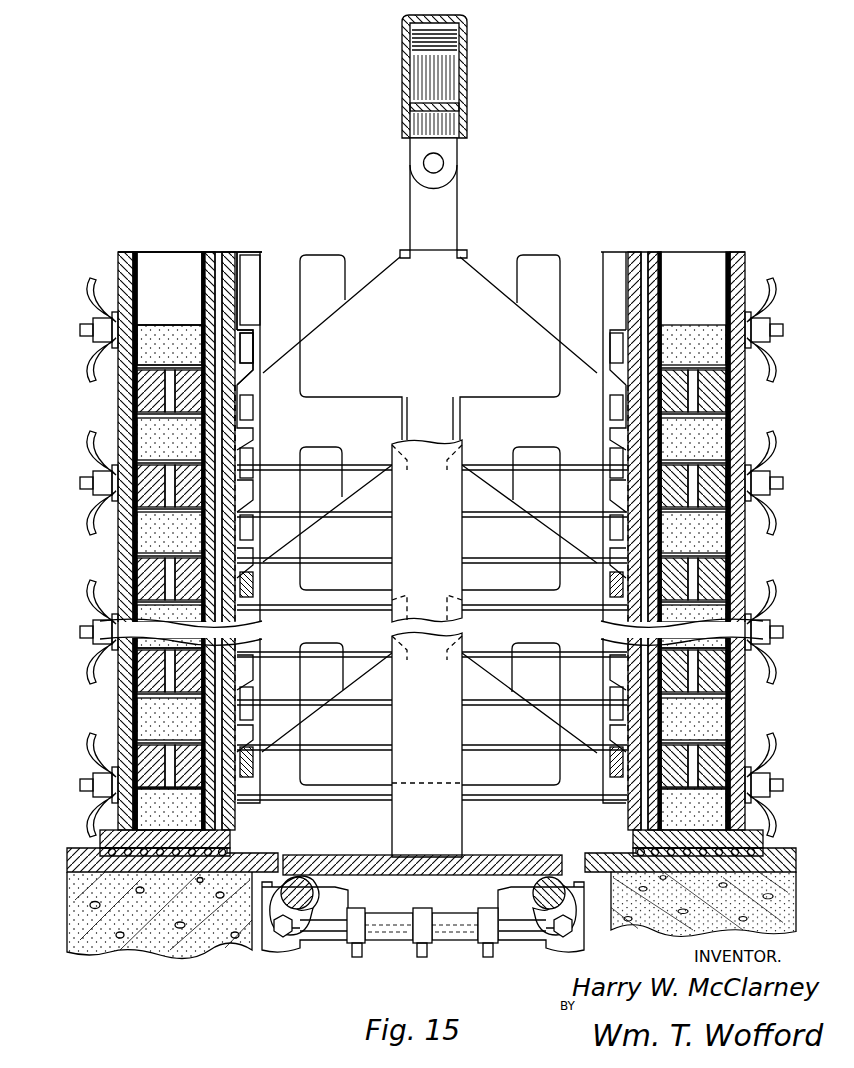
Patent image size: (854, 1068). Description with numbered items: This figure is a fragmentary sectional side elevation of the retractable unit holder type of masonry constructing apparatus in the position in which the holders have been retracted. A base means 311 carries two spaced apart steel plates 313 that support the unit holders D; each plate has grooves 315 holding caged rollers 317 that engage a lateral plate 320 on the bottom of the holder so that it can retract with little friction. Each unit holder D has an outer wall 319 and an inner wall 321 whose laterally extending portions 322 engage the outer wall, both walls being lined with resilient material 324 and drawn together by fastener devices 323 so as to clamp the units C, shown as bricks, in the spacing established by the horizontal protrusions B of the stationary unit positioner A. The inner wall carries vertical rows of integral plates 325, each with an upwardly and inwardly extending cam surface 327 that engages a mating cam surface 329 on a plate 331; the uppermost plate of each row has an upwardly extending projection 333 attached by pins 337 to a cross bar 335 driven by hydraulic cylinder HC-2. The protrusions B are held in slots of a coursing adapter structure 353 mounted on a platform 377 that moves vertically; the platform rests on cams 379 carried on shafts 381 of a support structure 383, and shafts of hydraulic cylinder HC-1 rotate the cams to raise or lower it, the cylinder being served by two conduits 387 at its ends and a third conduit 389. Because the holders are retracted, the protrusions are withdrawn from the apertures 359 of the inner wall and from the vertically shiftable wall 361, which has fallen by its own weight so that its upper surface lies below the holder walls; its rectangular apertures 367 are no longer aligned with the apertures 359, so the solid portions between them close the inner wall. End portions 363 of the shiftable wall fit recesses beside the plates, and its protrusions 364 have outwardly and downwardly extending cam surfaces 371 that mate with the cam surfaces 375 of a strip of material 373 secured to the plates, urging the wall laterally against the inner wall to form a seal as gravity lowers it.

The base means 311 is at (170, 950).
The steel plates 313 is at (75, 860).
The grooves 315 is at (95, 850).
The caged rollers 317 is at (243, 848).
The outer wall 319 is at (118, 265).
The lateral plate 320 is at (158, 840).
The inner wall 321 is at (210, 252).
The laterally extending portions 322 is at (167, 268).
The fastener devices 323 is at (100, 332).
The resilient material 324 is at (138, 252).
The plates 325 is at (325, 256).
The cam surface 327 is at (280, 362).
The mating cam surface 329 is at (377, 276).
The plate 331 is at (488, 323).
The upwardly extending projection 333 is at (428, 215).
The cross bar 335 is at (410, 62).
The pins 337 is at (444, 163).
The coursing adapter structure 353 is at (448, 817).
The apertures 359 is at (212, 282).
The vertically shiftable wall 361 is at (260, 254).
The end portions 363 is at (243, 256).
The protrusions 364 is at (250, 275).
The rectangular apertures 367 is at (240, 388).
The cam surfaces 371 is at (243, 320).
The strip of material 373 is at (255, 278).
The cam surfaces 375 is at (247, 303).
The platform 377 is at (478, 870).
The cams 379 is at (335, 896).
The shafts 381 is at (305, 892).
The support structure 383 is at (290, 948).
The conduits 387 is at (357, 957).
The third conduit 389 is at (422, 957).
The unit positioner A is at (424, 432).
The protrusions B is at (290, 455).
The units C is at (155, 325).
The unit holders D is at (108, 405).
The hydraulic cylinder HC-1 is at (425, 908).
The hydraulic cylinder HC-2 is at (463, 250).